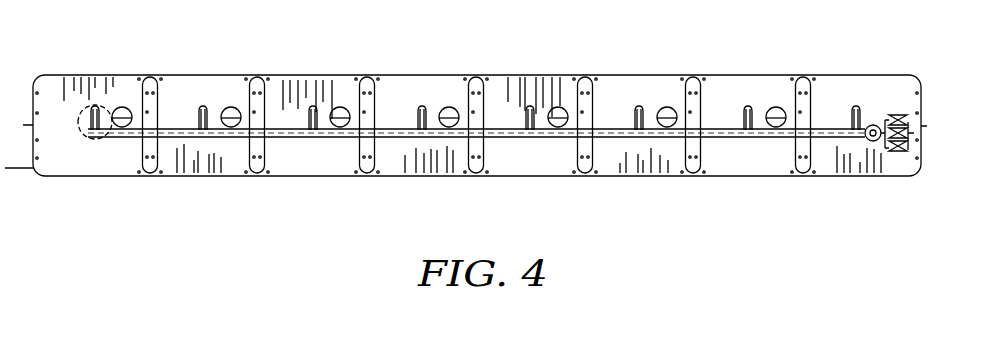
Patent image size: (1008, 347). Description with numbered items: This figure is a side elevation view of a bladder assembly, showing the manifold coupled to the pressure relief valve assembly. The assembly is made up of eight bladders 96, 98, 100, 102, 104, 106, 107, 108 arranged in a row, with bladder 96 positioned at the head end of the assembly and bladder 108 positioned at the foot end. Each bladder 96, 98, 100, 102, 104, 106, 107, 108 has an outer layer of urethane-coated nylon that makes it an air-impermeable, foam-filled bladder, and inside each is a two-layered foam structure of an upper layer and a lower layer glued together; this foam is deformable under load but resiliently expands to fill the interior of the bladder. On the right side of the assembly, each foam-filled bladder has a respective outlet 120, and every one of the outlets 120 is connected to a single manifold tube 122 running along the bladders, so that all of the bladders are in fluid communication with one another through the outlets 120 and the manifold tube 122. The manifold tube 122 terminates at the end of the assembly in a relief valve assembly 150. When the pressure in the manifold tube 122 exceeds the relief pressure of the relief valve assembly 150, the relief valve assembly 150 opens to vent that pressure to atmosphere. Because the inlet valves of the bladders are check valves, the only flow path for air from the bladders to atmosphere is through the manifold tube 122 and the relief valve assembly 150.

The bladder 96 is at (122, 158).
The bladder 98 is at (212, 158).
The bladder 100 is at (300, 160).
The bladder 102 is at (433, 158).
The bladder 104 is at (535, 158).
The bladder 106 is at (633, 158).
The bladder 107 is at (732, 162).
The bladder 108 is at (855, 162).
The outlet 120 is at (97, 106).
The manifold tube 122 is at (345, 140).
The relief valve assembly 150 is at (892, 171).